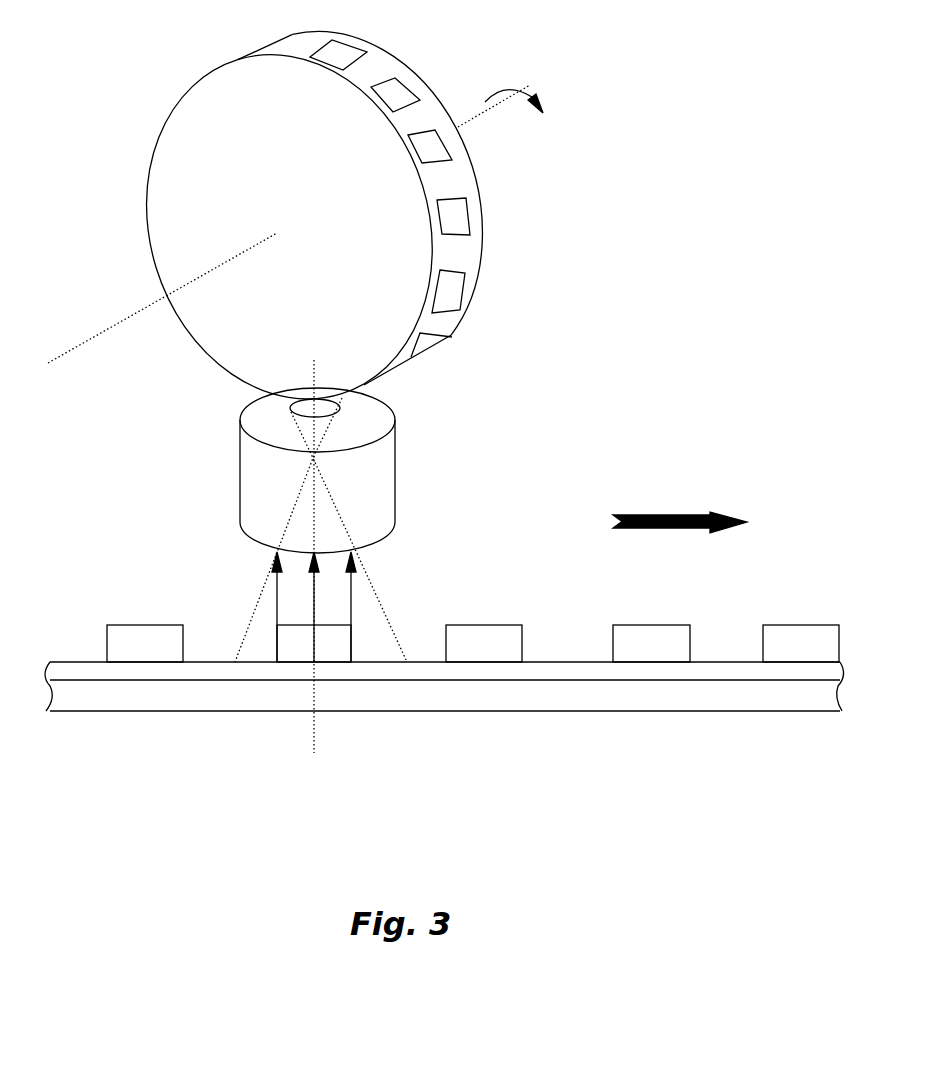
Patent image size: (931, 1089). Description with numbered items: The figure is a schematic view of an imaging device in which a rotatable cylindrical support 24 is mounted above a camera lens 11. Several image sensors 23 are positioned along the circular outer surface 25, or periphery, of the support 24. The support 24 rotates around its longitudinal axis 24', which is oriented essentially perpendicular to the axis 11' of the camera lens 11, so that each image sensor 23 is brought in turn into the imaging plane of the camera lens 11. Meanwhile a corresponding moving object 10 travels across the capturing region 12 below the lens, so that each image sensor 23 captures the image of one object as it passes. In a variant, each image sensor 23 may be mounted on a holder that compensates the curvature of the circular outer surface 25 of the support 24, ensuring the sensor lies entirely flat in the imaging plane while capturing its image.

The moving object 10 is at (327, 635).
The camera lens 11 is at (286, 470).
The axis of the camera lens 11' is at (351, 556).
The capturing region 12 is at (225, 610).
The image sensor 23 is at (393, 98).
The rotatable cylindrical support 24 is at (283, 227).
The longitudinal axis 24' is at (285, 224).
The circular outer surface 25 is at (473, 263).